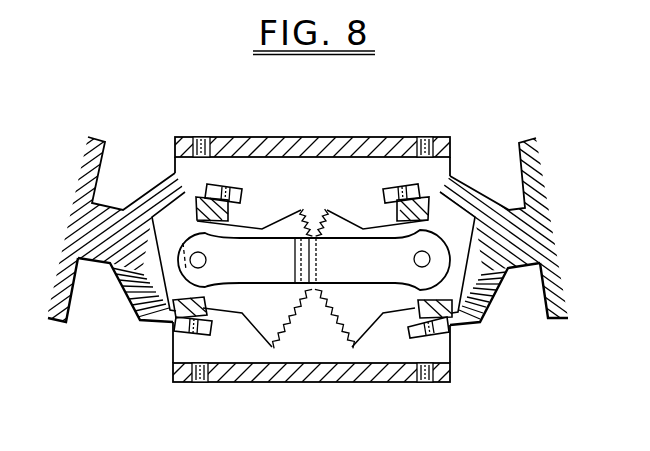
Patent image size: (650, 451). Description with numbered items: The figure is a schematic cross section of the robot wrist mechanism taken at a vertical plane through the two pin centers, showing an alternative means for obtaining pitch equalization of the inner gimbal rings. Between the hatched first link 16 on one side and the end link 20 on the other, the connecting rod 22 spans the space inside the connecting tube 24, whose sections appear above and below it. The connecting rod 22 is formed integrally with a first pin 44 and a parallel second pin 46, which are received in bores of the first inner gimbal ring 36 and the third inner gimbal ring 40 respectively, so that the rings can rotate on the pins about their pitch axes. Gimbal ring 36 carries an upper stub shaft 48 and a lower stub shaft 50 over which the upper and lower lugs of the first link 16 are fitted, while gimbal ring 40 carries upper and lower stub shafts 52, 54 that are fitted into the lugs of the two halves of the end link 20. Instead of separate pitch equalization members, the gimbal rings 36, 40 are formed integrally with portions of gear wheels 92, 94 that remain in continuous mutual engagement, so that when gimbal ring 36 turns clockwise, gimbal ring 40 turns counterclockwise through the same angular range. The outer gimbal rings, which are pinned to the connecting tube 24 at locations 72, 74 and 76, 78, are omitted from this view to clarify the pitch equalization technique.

The first link 16 is at (135, 183).
The end link 20 is at (515, 306).
The connecting rod 22 is at (275, 268).
The connecting tube 24 is at (318, 136).
The first inner gimbal ring 36 is at (233, 219).
The third inner gimbal ring 40 is at (392, 218).
The first pin 44 is at (196, 262).
The second pin 46 is at (436, 247).
The upper stub shaft 48 is at (218, 184).
The lower stub shaft 50 is at (175, 329).
The upper stub shaft 52 is at (400, 189).
The lower stub shaft 54 is at (445, 333).
The pin connection 72 is at (207, 137).
The pin connection 74 is at (196, 383).
The pin connection 76 is at (428, 139).
The pin connection 78 is at (423, 383).
The gear wheel portion 92 is at (265, 334).
The gear wheel portion 94 is at (362, 334).